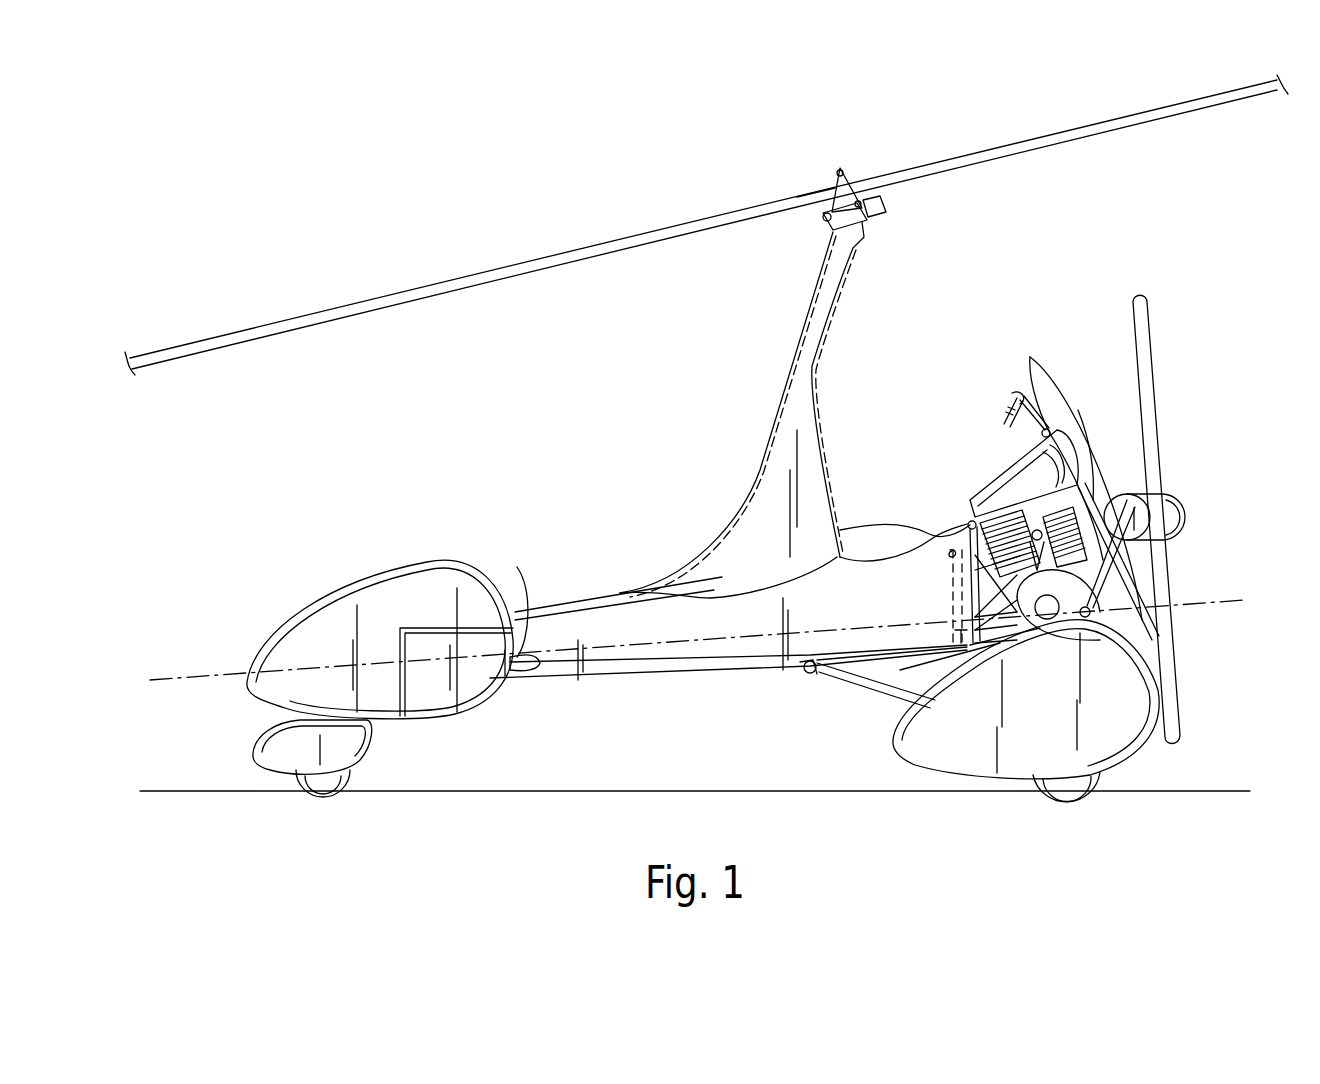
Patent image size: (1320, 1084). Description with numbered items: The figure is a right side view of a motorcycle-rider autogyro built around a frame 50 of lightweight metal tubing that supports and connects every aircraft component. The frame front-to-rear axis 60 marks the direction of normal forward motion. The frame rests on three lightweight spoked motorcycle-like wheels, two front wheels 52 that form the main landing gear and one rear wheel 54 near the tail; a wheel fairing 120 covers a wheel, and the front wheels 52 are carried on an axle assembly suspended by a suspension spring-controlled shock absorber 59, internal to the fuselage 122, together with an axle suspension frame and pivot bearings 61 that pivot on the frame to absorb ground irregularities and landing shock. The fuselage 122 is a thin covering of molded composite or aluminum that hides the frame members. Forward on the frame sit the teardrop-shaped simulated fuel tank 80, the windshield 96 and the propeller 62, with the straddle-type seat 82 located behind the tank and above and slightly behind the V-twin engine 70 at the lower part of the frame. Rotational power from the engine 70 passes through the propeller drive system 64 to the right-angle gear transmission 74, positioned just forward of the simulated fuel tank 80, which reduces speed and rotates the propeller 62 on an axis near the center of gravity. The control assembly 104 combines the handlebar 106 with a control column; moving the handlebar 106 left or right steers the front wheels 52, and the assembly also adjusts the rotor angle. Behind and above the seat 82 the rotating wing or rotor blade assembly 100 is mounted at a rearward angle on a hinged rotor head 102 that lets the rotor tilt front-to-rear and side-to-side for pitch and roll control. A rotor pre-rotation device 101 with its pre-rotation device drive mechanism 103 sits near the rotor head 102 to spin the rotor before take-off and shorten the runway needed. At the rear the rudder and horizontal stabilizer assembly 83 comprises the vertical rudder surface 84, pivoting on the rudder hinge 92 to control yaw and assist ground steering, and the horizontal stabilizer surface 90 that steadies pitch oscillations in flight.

The rotating wing or rotor blade assembly 100 is at (733, 213).
The rotor pre-rotation device 101 is at (888, 201).
The rotor head 102 is at (830, 222).
The pre-rotation device drive mechanism 103 is at (832, 203).
The control assembly 104 is at (1045, 430).
The handlebar 106 is at (1003, 419).
The straddle-type seat 82 is at (873, 527).
The frame front-to-rear axis 60 is at (186, 670).
The rudder surface 84 is at (405, 592).
The rudder and horizontal stabilizer assembly 83 is at (470, 606).
The rudder hinge 92 is at (418, 631).
The horizontal stabilizer surface 90 is at (530, 663).
The wheel fairing 120 is at (273, 768).
The rear wheel 54 is at (338, 774).
The front wheel 52 is at (1043, 782).
The fuselage 122 is at (650, 660).
The axle suspension frame and pivot bearings 61 is at (820, 672).
The frame 50 is at (970, 528).
The suspension spring-controlled shock absorber 59 is at (967, 580).
The teardrop-shaped simulated fuel tank 80 is at (1017, 480).
The engine 70 is at (1060, 612).
The propeller drive system 64 is at (1110, 541).
The windshield 96 is at (1053, 383).
The propeller 62 is at (1147, 350).
The right-angle gear transmission 74 is at (1129, 503).